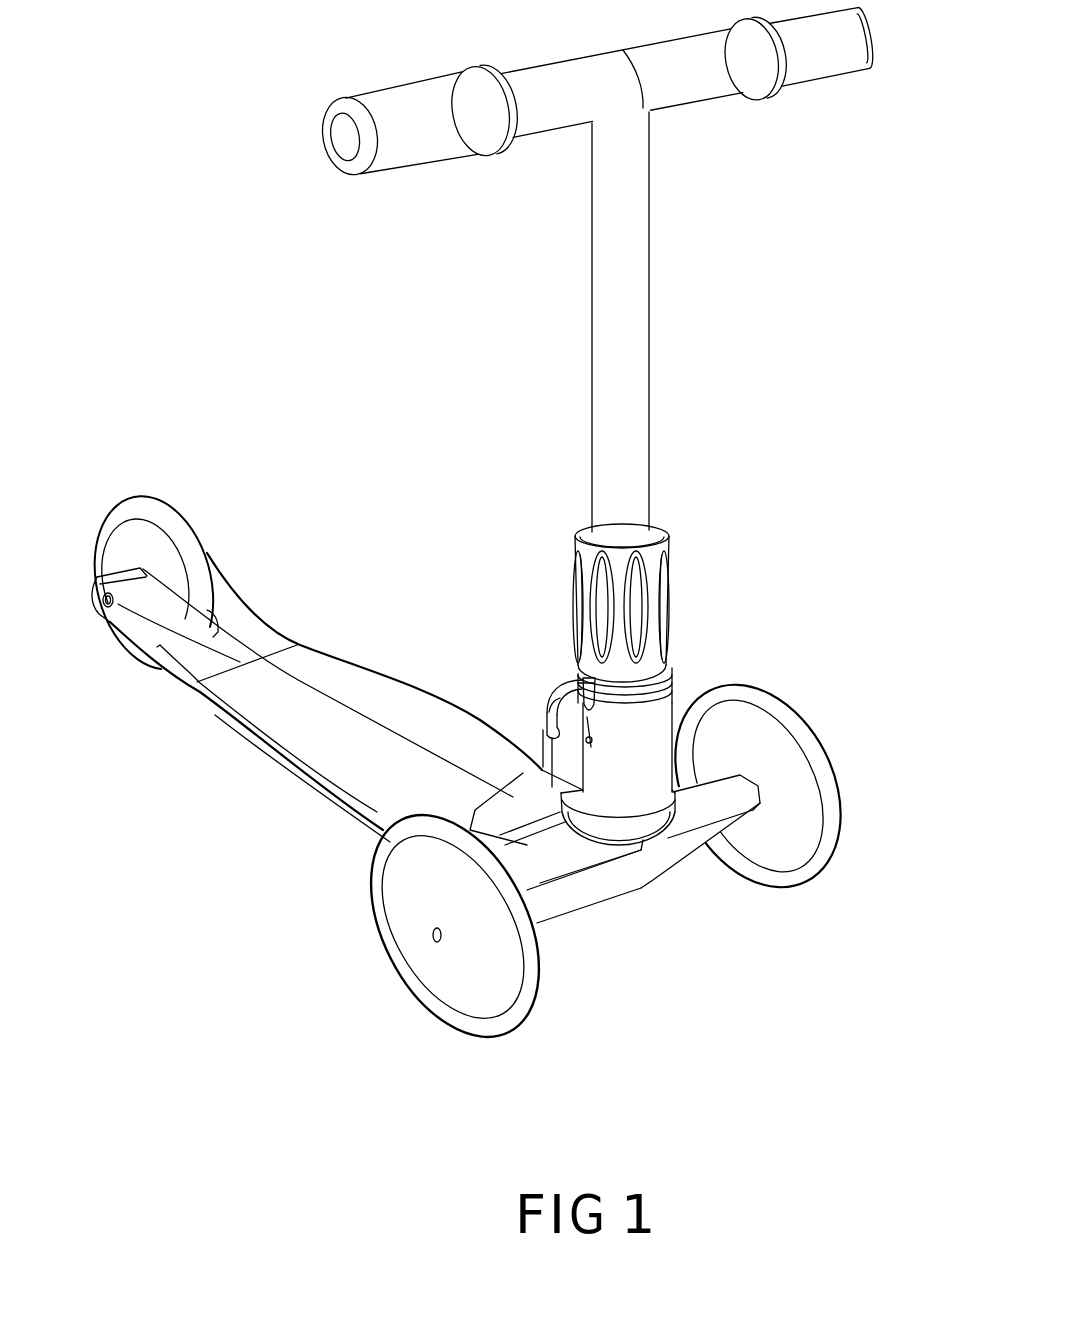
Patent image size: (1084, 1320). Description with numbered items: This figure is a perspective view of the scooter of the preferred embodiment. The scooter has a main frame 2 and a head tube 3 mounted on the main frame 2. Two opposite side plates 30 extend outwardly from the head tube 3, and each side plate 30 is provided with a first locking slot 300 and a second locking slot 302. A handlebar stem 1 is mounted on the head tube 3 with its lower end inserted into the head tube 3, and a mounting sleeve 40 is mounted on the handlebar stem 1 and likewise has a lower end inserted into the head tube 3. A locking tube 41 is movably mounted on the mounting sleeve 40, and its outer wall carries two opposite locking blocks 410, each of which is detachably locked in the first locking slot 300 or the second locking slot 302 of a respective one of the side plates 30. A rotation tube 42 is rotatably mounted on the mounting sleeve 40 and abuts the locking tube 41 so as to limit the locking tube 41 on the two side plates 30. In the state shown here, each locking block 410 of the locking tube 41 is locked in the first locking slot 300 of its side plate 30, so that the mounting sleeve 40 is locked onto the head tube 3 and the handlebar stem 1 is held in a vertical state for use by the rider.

The handlebar stem 1 is at (637, 302).
The main frame 2 is at (347, 687).
The head tube 3 is at (638, 755).
The side plate 30 is at (553, 687).
The first locking slot 300 is at (582, 678).
The second locking slot 302 is at (547, 720).
The mounting sleeve 40 is at (660, 528).
The locking tube 41 is at (673, 676).
The rotation tube 42 is at (665, 593).
The locking block 410 is at (583, 690).